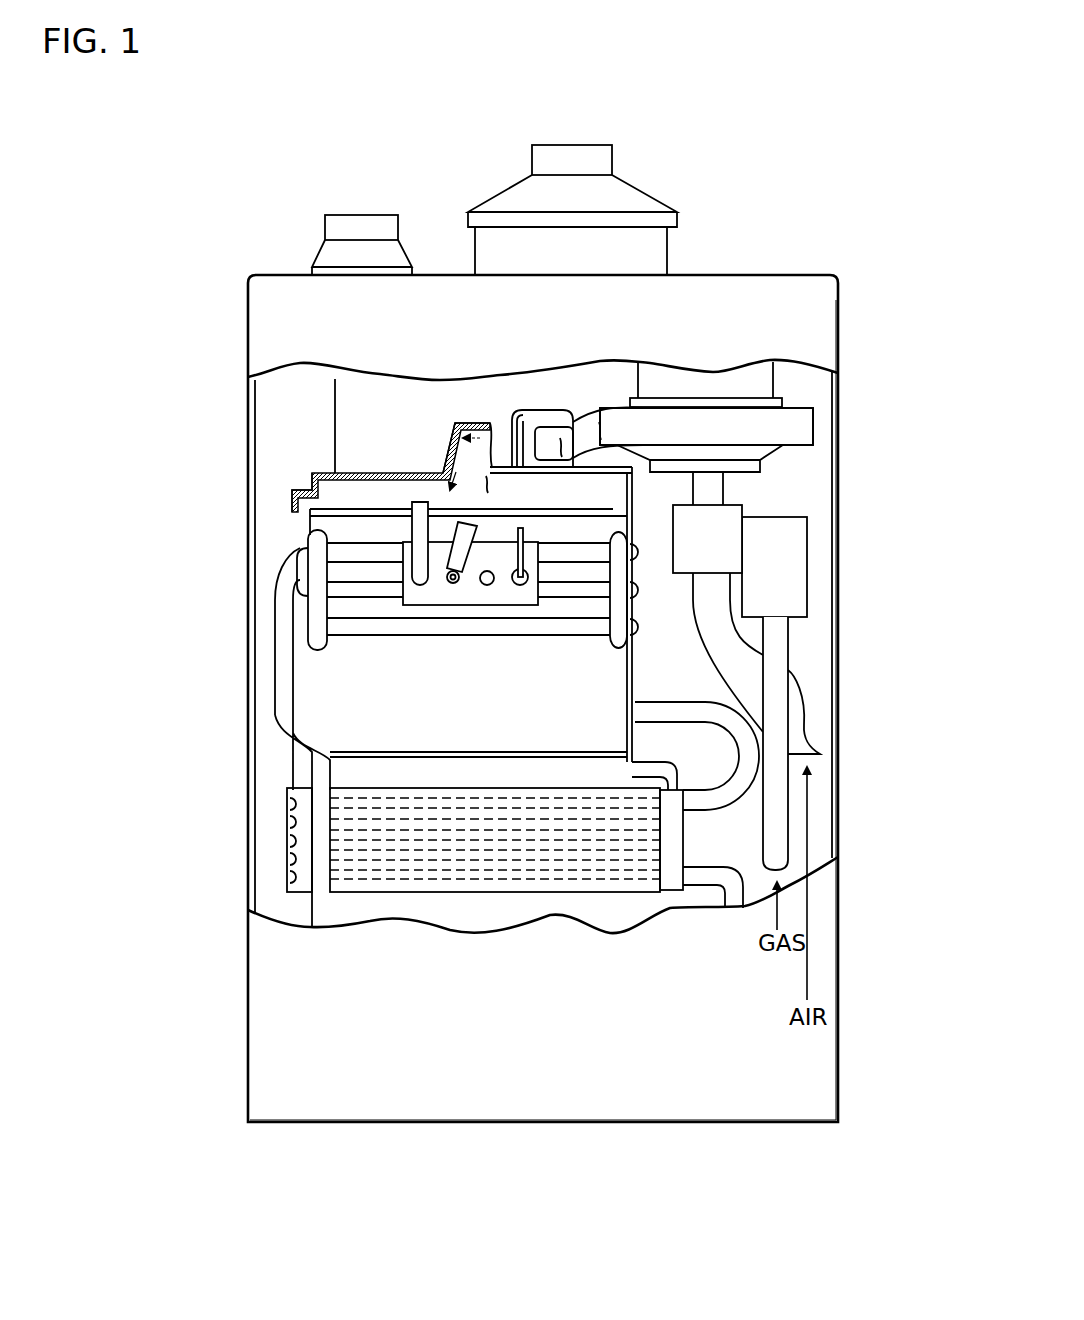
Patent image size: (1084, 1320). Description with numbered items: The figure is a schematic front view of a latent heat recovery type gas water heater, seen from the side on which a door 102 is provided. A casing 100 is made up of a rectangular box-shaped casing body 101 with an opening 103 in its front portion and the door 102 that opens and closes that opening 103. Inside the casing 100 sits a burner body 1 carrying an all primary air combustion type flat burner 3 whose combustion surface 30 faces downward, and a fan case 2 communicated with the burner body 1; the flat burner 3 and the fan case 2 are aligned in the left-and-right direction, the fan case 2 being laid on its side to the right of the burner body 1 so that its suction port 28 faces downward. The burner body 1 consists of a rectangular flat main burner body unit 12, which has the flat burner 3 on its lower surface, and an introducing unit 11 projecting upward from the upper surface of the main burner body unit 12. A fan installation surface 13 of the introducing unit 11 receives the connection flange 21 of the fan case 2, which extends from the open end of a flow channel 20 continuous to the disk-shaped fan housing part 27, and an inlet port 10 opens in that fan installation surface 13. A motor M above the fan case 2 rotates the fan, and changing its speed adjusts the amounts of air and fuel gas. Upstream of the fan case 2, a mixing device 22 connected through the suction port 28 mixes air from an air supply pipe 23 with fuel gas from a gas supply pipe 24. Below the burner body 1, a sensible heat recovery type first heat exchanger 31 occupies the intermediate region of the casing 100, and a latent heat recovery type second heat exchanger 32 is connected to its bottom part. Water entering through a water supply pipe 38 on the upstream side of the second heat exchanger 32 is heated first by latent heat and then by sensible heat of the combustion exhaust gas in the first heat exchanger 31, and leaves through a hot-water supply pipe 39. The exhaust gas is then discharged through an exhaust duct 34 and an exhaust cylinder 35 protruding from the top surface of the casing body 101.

The burner body 1 is at (323, 454).
The introducing unit 11 is at (447, 455).
The main burner body unit 12 is at (305, 490).
The flat burner 3 is at (293, 497).
The exhaust duct 34 is at (330, 405).
The fan installation surface 13 is at (515, 412).
The connection flange 21 is at (548, 420).
The flow channel 20 is at (583, 418).
The exhaust cylinder 35 is at (658, 252).
The motor M is at (745, 378).
The fan case 2 is at (788, 444).
The inlet port 10 is at (706, 426).
The fan housing part 27 is at (813, 427).
The suction port 28 is at (732, 467).
The mixing device 22 is at (733, 548).
The gas supply pipe 24 is at (780, 640).
The air supply pipe 23 is at (800, 710).
The opening 103 is at (830, 828).
The combustion surface 30 is at (349, 522).
The first heat exchanger 31 is at (368, 701).
The second heat exchanger 32 is at (383, 789).
The hot-water supply pipe 39 is at (283, 655).
The water supply pipe 38 is at (700, 878).
The casing 100 is at (575, 762).
The casing body 101 is at (838, 1115).
The door 102 is at (795, 1112).